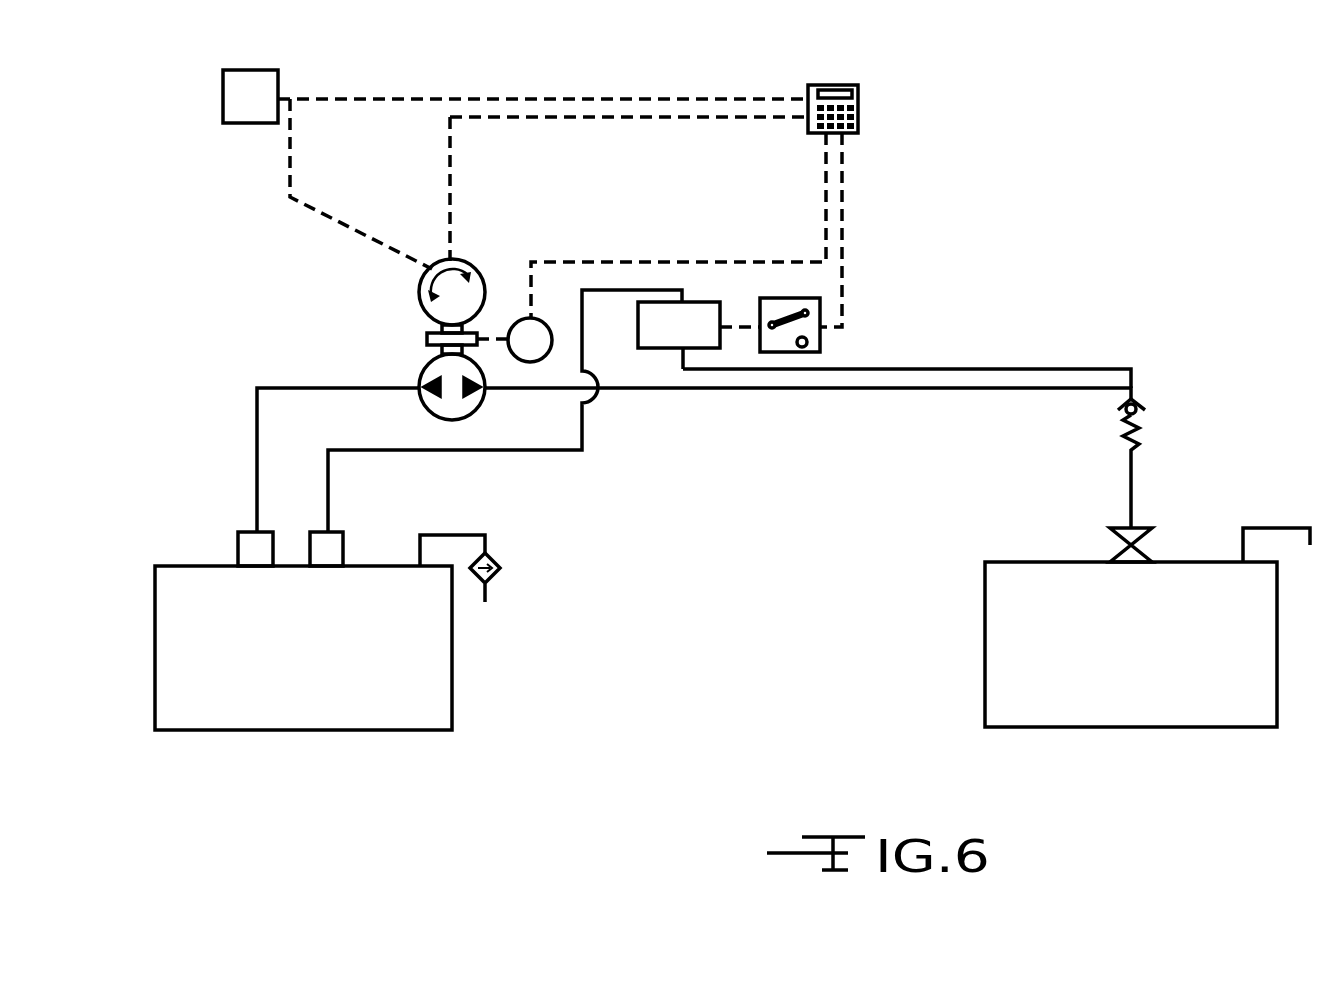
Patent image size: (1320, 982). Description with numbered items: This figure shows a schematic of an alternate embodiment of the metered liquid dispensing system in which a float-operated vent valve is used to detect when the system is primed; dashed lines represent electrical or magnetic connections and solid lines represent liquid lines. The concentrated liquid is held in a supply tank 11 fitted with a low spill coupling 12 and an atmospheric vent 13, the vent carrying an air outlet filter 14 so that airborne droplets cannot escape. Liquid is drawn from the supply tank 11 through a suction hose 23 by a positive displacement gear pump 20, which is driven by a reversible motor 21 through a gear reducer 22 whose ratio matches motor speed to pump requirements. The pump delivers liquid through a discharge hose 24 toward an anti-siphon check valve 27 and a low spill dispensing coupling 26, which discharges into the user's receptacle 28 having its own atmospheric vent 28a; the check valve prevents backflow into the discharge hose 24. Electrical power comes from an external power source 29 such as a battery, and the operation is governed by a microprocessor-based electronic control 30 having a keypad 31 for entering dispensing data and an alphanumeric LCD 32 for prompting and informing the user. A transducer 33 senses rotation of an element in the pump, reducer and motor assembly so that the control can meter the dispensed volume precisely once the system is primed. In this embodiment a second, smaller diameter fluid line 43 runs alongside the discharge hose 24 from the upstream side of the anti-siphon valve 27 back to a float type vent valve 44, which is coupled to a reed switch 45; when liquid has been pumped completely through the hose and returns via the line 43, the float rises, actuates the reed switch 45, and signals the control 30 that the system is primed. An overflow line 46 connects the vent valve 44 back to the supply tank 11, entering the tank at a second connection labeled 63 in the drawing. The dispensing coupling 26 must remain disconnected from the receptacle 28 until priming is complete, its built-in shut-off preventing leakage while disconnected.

The supply tank 11 is at (303, 648).
The low spill coupling 12 is at (275, 548).
The atmospheric vent 13 is at (420, 562).
The air outlet filter 14 is at (500, 568).
The positive displacement gear pump 20 is at (425, 376).
The reversible motor 21 is at (455, 262).
The gear reducer 22 is at (426, 336).
The suction hose 23 is at (278, 387).
The discharge hose 24 is at (1015, 390).
The low spill dispensing coupling 26 is at (1107, 533).
The anti-siphon check valve 27 is at (1137, 402).
The user's receptacle 28 is at (1131, 644).
The atmospheric vent 28a is at (1265, 528).
The external power source 29 is at (252, 70).
The electronic control 30 is at (855, 107).
The keypad 31 is at (858, 133).
The alphanumeric LCD 32 is at (808, 93).
The transducer 33 is at (515, 322).
The fluid line 43 is at (940, 368).
The float type vent valve 44 is at (698, 302).
The reed switch 45 is at (790, 298).
The overflow line 46 is at (356, 450).
The return fitting 63 is at (343, 548).